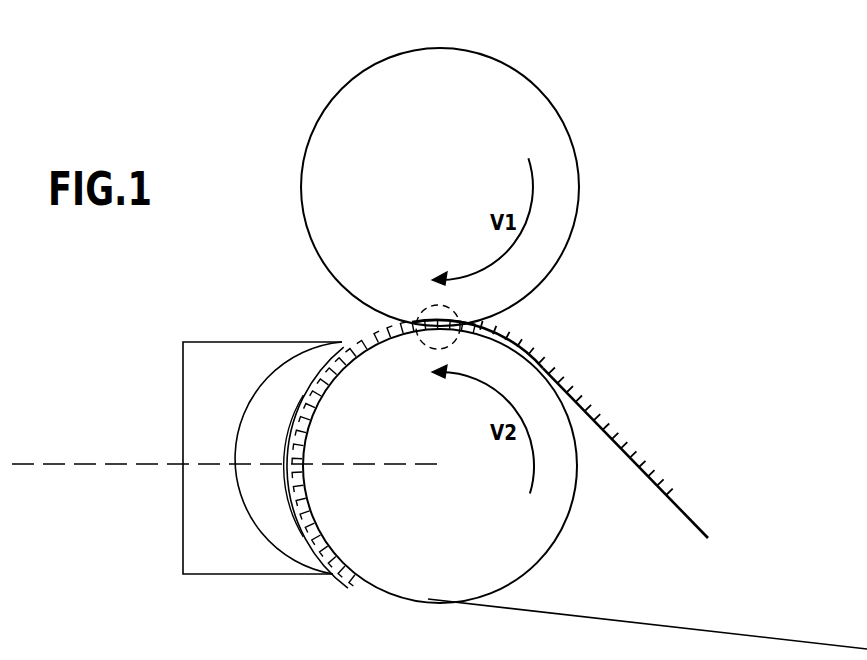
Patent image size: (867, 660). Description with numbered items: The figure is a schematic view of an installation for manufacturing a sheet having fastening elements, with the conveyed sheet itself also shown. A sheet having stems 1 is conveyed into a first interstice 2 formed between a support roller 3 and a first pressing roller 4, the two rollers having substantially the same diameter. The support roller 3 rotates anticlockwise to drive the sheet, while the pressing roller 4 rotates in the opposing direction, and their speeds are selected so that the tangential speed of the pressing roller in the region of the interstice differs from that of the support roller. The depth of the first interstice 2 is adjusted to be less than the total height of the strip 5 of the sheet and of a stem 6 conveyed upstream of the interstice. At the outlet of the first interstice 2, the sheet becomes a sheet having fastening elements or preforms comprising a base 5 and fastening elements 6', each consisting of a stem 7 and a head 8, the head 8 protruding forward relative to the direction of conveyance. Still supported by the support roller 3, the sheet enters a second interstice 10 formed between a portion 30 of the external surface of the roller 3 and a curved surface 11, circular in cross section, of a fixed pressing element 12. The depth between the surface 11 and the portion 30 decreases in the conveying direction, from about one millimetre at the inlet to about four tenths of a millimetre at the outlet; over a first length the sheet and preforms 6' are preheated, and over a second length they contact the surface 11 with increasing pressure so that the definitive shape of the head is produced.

The sheet having stems 1 is at (690, 514).
The first interstice 2 is at (425, 315).
The support roller 3 is at (520, 543).
The first pressing roller 4 is at (443, 62).
The strip 5 is at (630, 458).
The stem 6 is at (576, 408).
The fastening elements 6' is at (317, 445).
The stem 7 is at (300, 398).
The head 8 is at (368, 336).
The second interstice 10 is at (330, 576).
The curved surface 11 is at (288, 437).
The pressing element 12 is at (270, 512).
The portion of the external surface 30 is at (307, 415).